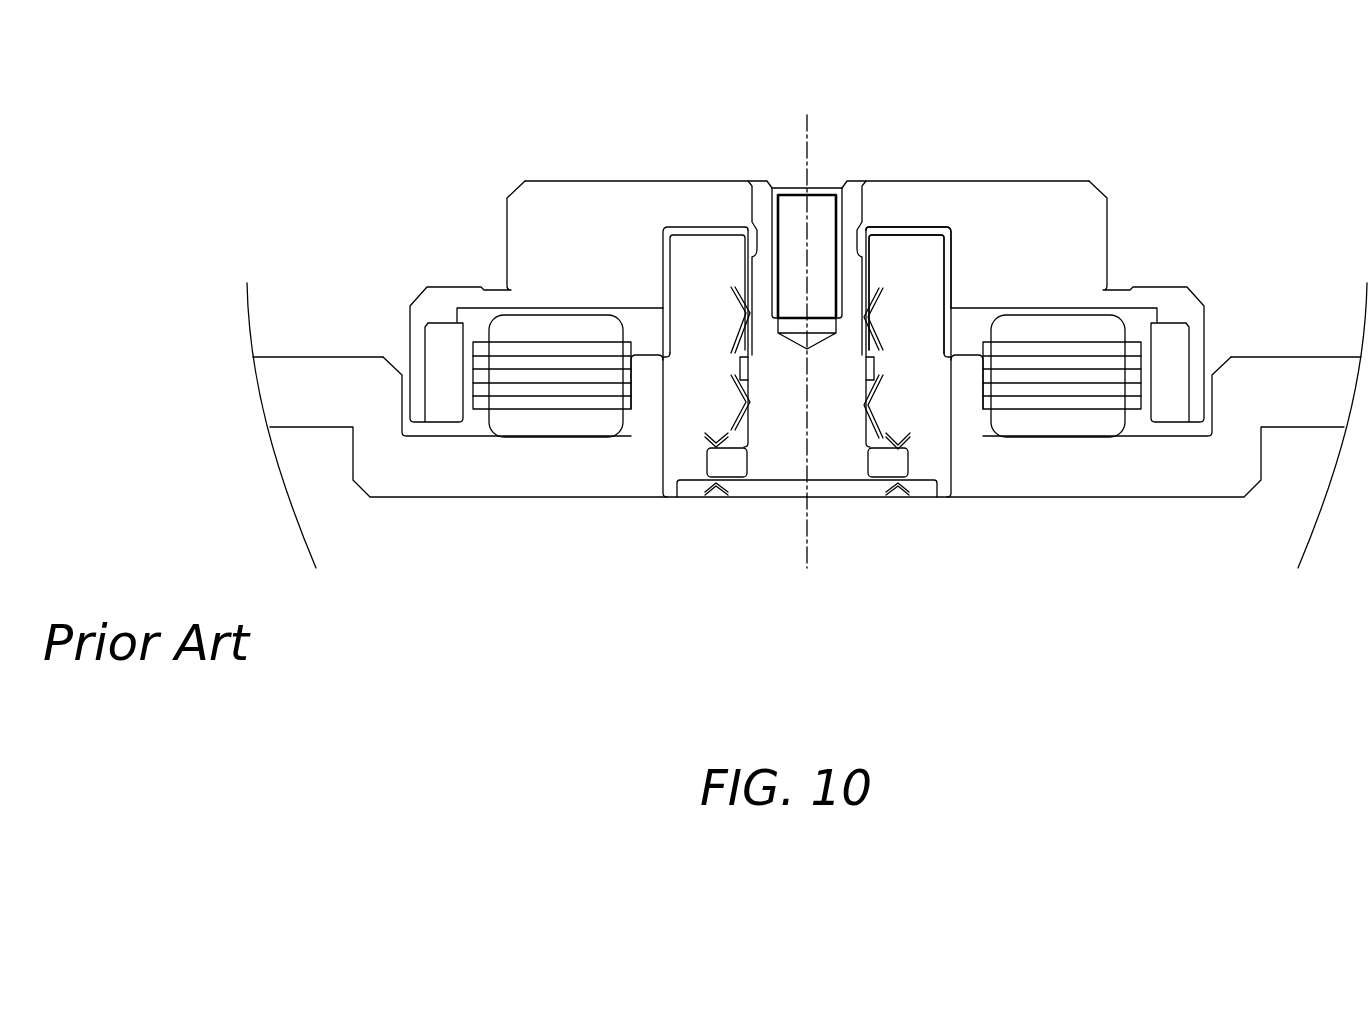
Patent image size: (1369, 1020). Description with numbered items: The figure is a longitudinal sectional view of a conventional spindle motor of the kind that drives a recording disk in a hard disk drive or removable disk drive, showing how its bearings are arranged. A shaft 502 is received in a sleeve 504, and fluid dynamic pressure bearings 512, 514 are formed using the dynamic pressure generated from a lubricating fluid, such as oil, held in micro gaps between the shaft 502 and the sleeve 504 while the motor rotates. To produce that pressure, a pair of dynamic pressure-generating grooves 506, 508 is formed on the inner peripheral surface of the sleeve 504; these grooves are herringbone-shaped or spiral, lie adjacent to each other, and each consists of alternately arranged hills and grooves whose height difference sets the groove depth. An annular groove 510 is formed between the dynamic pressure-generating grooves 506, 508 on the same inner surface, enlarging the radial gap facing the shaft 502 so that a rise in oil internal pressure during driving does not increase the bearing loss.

The shaft 502 is at (843, 250).
The sleeve 504 is at (913, 287).
The dynamic pressure-generating groove 506 is at (735, 303).
The dynamic pressure-generating groove 508 is at (735, 431).
The annular groove 510 is at (745, 370).
The fluid dynamic pressure bearing 512 is at (857, 322).
The fluid dynamic pressure bearing 514 is at (870, 407).